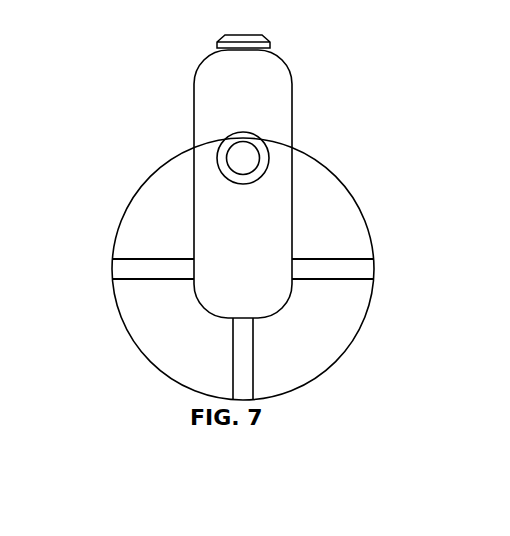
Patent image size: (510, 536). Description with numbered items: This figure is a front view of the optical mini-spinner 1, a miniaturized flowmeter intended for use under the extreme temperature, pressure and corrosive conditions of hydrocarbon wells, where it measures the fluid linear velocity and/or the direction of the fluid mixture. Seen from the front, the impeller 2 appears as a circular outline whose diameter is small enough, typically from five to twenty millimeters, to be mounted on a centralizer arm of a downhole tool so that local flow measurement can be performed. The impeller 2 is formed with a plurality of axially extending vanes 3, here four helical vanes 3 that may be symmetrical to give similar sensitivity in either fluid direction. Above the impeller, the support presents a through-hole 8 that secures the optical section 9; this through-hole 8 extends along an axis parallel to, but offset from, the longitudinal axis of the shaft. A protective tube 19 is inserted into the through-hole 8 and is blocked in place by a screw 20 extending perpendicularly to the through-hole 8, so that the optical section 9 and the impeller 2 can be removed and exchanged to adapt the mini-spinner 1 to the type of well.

The optical mini-spinner 1 is at (138, 69).
The impeller 2 is at (375, 267).
The vanes 3 is at (135, 267).
The through-hole 8 is at (243, 132).
The optical section 9 is at (216, 151).
The protective tube 19 is at (262, 170).
The screw 20 is at (256, 34).